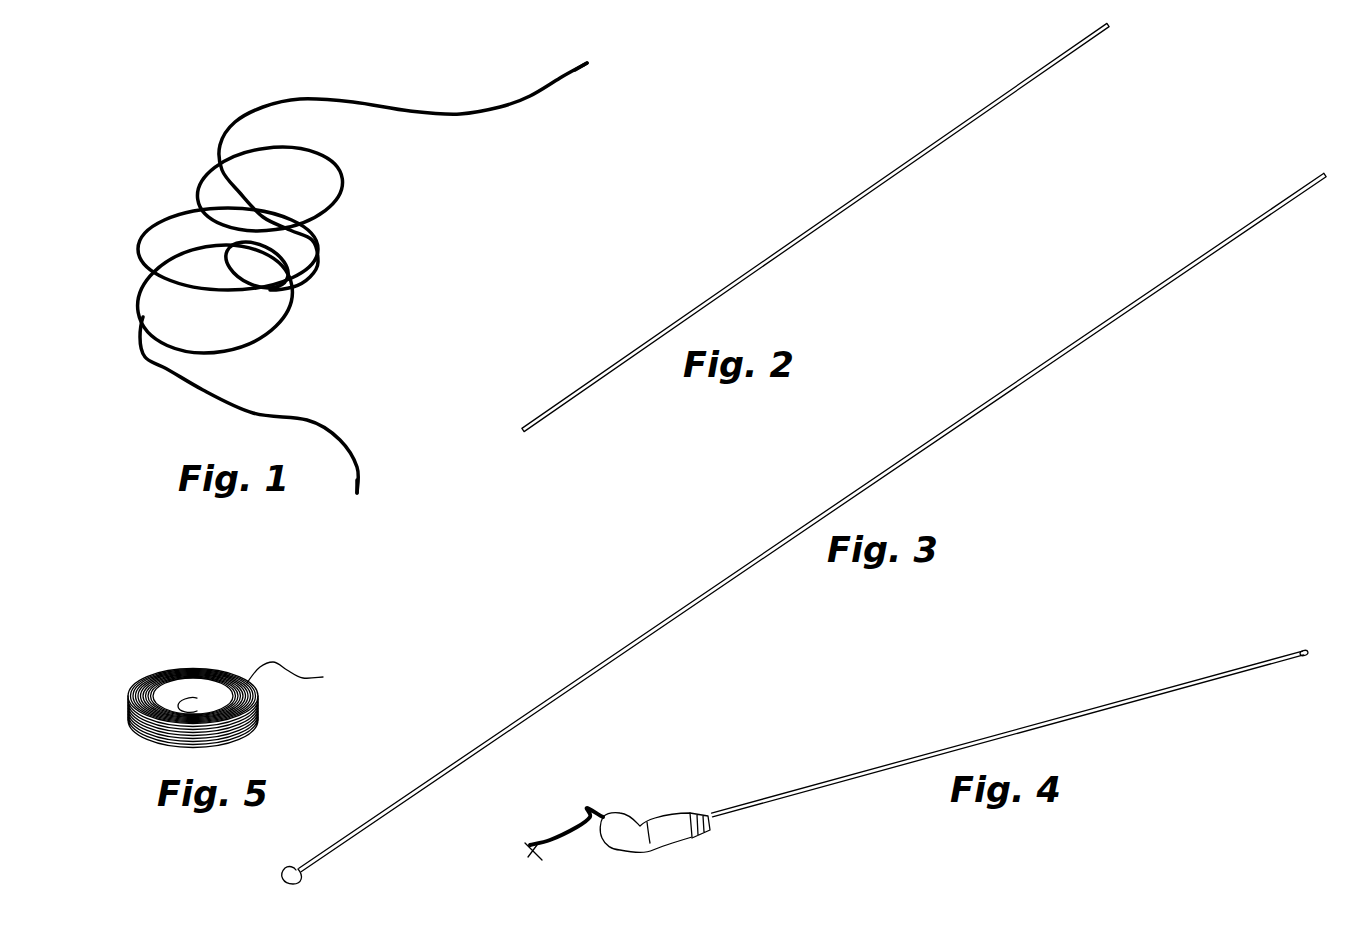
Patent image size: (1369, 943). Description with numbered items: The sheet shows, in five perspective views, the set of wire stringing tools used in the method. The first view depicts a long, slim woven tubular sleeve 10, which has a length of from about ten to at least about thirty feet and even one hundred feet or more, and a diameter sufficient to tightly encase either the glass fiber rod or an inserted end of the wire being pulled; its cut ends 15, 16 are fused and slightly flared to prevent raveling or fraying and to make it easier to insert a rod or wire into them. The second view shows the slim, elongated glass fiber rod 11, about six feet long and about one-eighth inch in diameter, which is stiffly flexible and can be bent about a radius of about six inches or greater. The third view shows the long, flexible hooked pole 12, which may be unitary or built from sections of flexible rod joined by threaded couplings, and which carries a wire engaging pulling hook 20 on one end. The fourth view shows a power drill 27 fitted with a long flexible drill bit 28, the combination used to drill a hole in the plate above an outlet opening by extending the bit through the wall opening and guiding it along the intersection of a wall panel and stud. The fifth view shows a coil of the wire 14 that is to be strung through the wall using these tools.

In FIG. 1, the woven tubular sleeve 10 is at (410, 111).
In FIG. 1, the cut end of sleeve 15 is at (355, 492).
In FIG. 1, the cut end of sleeve 16 is at (587, 63).
In FIG. 2, the glass fiber rod 11 is at (775, 256).
In FIG. 3, the hooked pole 12 is at (664, 620).
In FIG. 3, the pulling hook 20 is at (283, 872).
In FIG. 4, the power drill 27 is at (657, 817).
In FIG. 4, the flexible drill bit 28 is at (843, 778).
In FIG. 5, the wire 14 is at (213, 670).